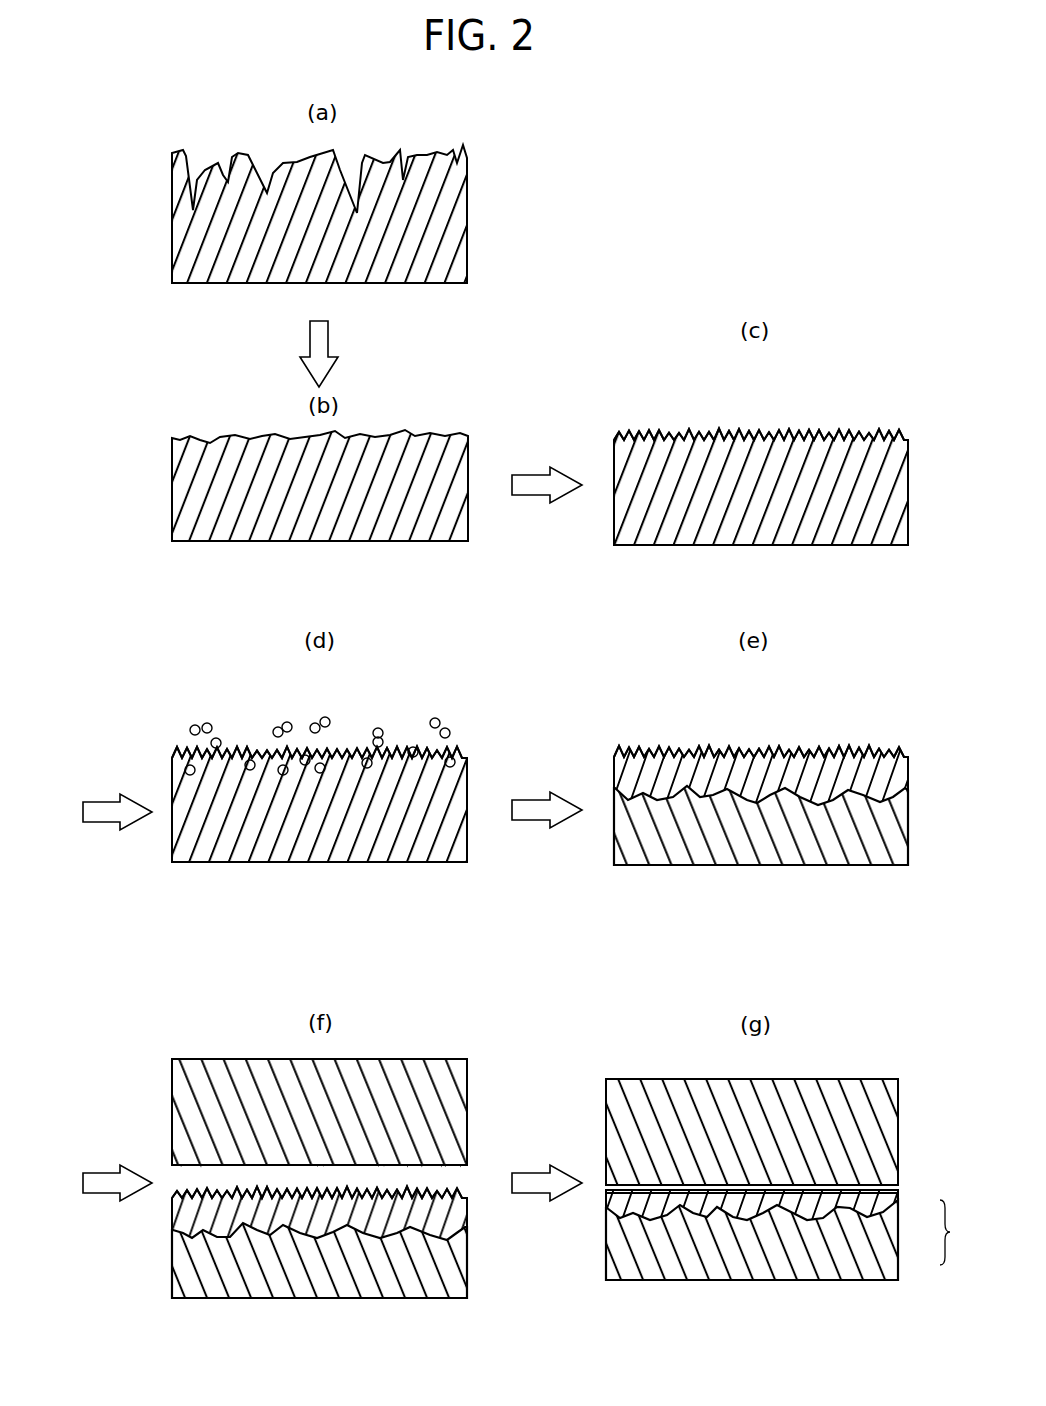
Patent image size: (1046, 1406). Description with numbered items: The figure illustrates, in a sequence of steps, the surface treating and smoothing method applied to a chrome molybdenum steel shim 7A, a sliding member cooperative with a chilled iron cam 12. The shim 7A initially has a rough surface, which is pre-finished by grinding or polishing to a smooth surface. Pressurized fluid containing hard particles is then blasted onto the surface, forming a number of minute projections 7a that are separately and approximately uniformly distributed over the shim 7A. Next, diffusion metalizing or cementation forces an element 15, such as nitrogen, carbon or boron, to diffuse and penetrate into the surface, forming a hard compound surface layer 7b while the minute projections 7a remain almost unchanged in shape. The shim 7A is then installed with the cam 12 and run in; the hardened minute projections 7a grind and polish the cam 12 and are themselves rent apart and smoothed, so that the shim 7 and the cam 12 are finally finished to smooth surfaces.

The chrome molybdenum steel shim 7A is at (468, 195).
The minute projections 7a is at (738, 432).
The hard compound surface layer 7b is at (614, 778).
The chilled iron cam 12 is at (172, 1098).
The element 15 is at (192, 723).
The shim 7 is at (954, 1232).